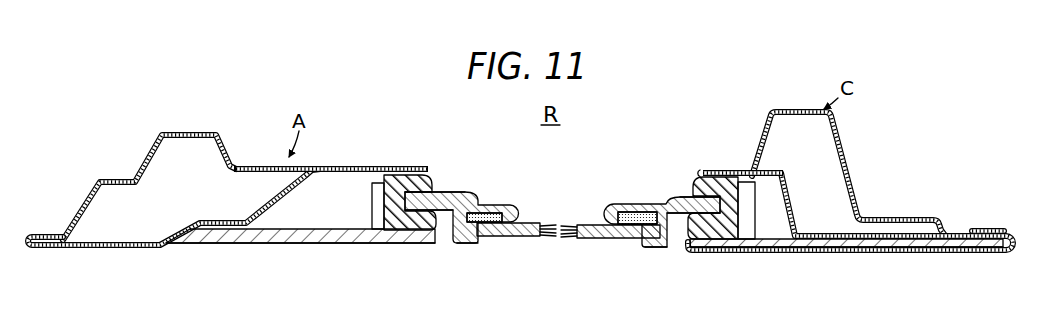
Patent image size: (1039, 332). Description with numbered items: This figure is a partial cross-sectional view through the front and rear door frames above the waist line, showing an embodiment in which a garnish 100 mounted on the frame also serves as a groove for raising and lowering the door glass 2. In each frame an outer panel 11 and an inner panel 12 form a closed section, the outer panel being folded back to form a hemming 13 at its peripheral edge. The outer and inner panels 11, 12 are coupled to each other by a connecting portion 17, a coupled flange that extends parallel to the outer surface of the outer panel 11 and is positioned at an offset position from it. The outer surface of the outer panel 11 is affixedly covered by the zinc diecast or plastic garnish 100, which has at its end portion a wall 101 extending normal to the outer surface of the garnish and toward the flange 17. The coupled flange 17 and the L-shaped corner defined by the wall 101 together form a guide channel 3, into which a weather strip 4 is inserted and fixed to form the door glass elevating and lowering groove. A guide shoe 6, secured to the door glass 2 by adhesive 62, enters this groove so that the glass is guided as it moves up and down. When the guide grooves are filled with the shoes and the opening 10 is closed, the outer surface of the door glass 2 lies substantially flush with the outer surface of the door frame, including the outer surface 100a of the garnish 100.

The door glass 2 is at (510, 238).
The guide channel 3 is at (453, 189).
The weather strip 4 is at (431, 180).
The guide shoe 6 is at (463, 205).
The door window glass opening 10 is at (446, 246).
The door outer panel 11 is at (121, 249).
The door inner panel 12 is at (211, 131).
The hemming 13 is at (961, 226).
The connecting portion 17 is at (405, 164).
The adhesive 62 is at (500, 213).
The garnish 100 is at (265, 245).
The outer surface of the garnish 100a is at (334, 245).
The wall 101 is at (373, 210).